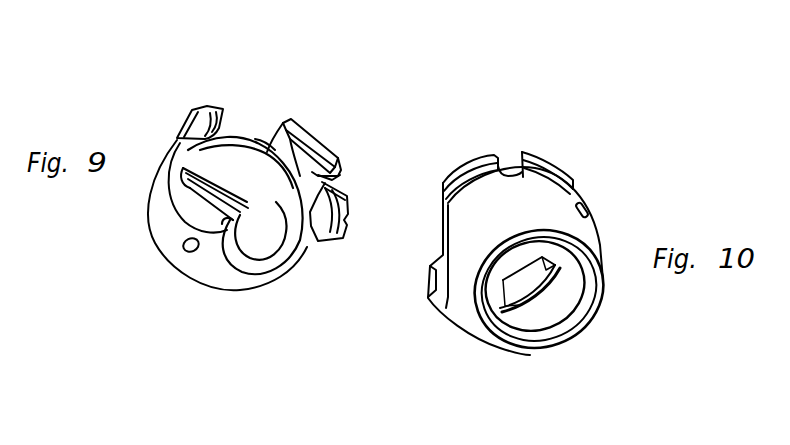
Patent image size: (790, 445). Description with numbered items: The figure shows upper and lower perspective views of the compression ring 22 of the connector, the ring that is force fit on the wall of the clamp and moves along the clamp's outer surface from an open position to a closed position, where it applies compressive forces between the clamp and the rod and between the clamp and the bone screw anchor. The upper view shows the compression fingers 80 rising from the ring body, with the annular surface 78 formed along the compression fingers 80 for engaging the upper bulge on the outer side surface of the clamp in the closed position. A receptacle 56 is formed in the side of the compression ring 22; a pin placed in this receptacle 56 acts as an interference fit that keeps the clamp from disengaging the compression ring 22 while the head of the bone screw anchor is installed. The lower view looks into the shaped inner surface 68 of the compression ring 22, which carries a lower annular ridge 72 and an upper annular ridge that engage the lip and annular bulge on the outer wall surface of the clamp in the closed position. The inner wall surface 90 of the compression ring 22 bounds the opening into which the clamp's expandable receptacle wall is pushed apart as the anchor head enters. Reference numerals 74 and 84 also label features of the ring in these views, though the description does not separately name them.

In FIG. 9, the compression ring 22 is at (248, 215).
In FIG. 10, the compression ring 22 is at (597, 207).
In FIG. 9, the receptacle 56 is at (192, 256).
In FIG. 10, the shaped inner surface 68 is at (552, 302).
In FIG. 10, the lower annular ridge 72 is at (525, 352).
In FIG. 9, the collar band 74 is at (273, 147).
In FIG. 9, the annular surface 78 is at (295, 157).
In FIG. 9, the compression fingers 80 is at (183, 114).
In FIG. 10, the compression fingers 80 is at (442, 205).
In FIG. 10, the tab 84 is at (547, 162).
In FIG. 9, the inner wall surface 90 is at (228, 162).